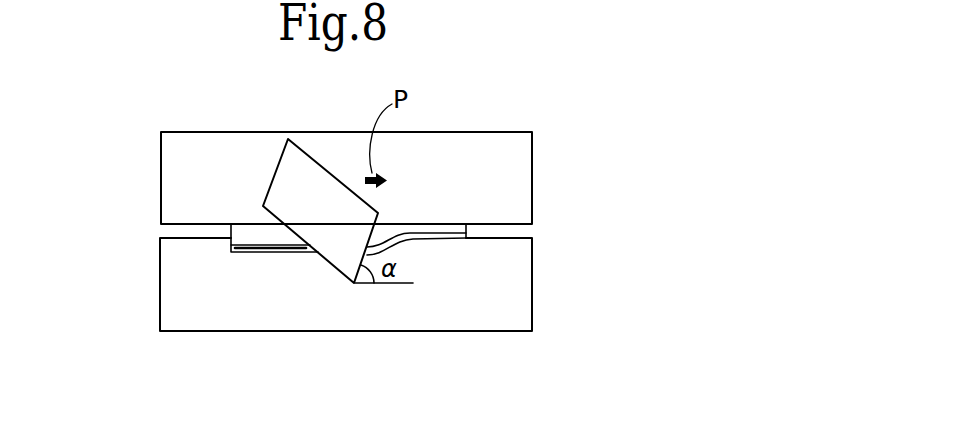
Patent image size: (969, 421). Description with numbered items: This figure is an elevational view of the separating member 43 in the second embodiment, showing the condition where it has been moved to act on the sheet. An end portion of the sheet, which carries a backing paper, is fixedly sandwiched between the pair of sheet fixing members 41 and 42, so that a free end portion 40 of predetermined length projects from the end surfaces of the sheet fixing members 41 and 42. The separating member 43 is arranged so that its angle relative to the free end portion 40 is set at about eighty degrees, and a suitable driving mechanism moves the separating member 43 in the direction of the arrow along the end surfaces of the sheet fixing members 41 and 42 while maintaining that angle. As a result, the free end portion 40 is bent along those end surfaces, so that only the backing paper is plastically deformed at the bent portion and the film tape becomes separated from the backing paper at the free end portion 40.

The free end portion 40 is at (290, 272).
The sheet fixing member 41 is at (513, 170).
The sheet fixing member 42 is at (510, 278).
The separating member 43 is at (282, 180).